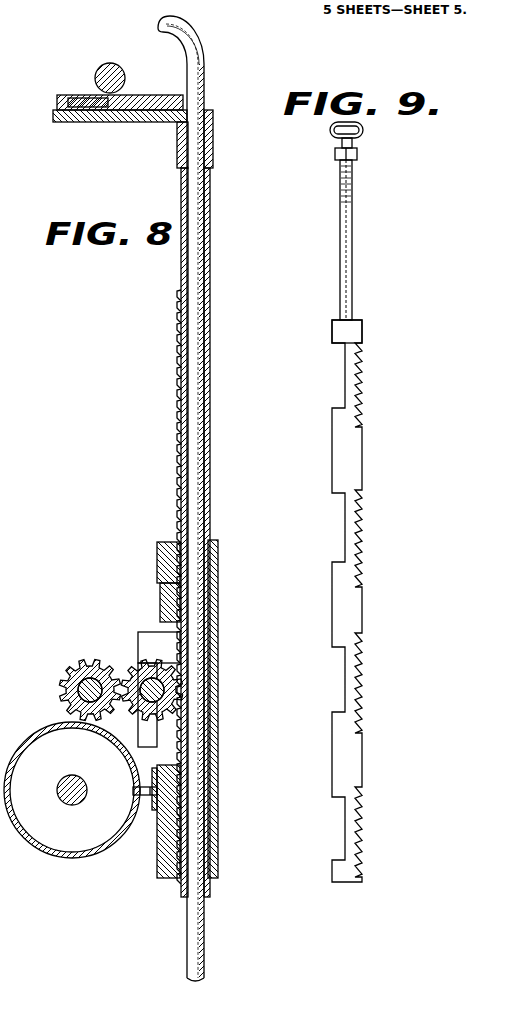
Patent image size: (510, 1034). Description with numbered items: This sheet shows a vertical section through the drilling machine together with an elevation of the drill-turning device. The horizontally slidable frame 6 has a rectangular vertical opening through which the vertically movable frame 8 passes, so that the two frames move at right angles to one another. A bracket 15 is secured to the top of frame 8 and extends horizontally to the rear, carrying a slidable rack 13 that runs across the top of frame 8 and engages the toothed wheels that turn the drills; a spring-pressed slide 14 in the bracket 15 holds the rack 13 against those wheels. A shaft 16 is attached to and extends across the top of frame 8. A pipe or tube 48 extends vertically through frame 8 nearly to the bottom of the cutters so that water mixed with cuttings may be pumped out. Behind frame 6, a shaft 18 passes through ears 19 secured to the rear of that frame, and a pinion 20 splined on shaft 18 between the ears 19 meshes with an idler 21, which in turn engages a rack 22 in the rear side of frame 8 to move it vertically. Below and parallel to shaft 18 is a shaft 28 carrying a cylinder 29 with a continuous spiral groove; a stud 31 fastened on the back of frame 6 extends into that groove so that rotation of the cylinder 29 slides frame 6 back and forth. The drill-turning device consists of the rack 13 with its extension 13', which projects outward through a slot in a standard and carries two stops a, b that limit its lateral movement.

In FIG. 8, the frame 6 is at (220, 716).
In FIG. 8, the frame 8 is at (215, 148).
In FIG. 8, the slidable rack 13 is at (204, 498).
In FIG. 9, the slidable rack 13 is at (367, 601).
In FIG. 9, the extension 13' is at (373, 240).
In FIG. 8, the spring-pressed slide 14 is at (131, 112).
In FIG. 8, the bracket 15 is at (78, 124).
In FIG. 8, the shaft 16 is at (101, 68).
In FIG. 8, the shaft 18 is at (62, 689).
In FIG. 8, the ears 19 is at (138, 633).
In FIG. 8, the pinion 20 is at (60, 703).
In FIG. 8, the idler 21 is at (135, 666).
In FIG. 8, the rack 22 is at (180, 441).
In FIG. 8, the shaft 28 is at (75, 806).
In FIG. 8, the cylinder 29 is at (17, 840).
In FIG. 8, the stud 31 is at (131, 790).
In FIG. 8, the pipe or tube 48 is at (195, 206).
In FIG. 9, the stop a is at (357, 158).
In FIG. 9, the stop b is at (360, 320).